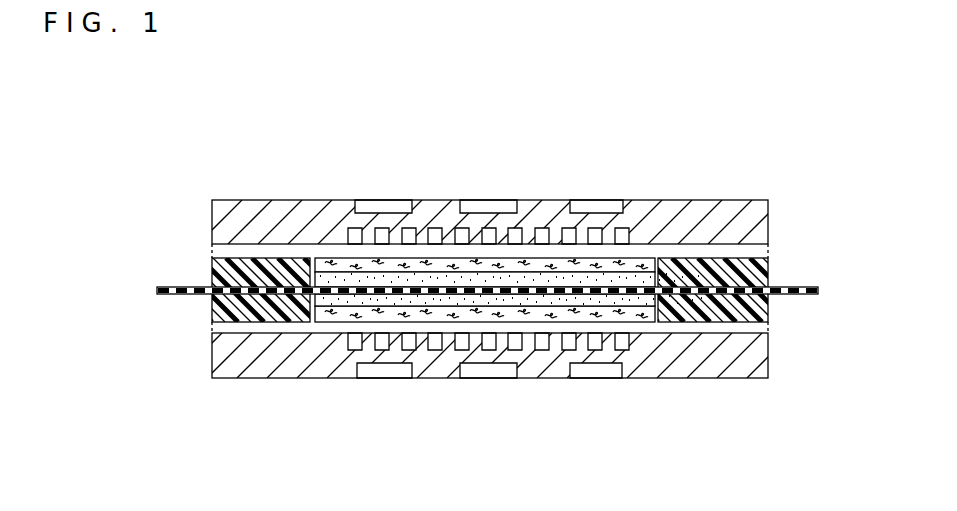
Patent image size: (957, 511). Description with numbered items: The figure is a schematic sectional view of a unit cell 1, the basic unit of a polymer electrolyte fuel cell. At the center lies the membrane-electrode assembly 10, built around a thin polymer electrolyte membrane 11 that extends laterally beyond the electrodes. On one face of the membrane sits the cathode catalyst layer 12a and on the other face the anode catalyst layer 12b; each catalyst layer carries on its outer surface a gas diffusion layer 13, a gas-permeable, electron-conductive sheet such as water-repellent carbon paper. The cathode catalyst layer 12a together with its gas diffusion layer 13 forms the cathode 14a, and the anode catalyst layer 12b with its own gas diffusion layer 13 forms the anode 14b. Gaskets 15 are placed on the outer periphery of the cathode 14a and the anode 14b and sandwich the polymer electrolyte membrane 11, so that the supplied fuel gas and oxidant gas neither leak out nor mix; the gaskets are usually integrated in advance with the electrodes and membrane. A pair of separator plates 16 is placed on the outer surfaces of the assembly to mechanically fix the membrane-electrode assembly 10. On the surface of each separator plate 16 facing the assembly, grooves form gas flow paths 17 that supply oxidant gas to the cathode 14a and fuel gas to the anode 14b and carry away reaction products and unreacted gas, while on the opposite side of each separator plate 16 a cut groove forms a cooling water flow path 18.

The unit cell 1 is at (422, 106).
The membrane-electrode assembly 10 is at (148, 243).
The polymer electrolyte membrane 11 is at (796, 294).
The cathode catalyst layer 12a is at (637, 262).
The anode catalyst layer 12b is at (638, 312).
The gas diffusion layer 13 is at (588, 270).
The cathode 14a is at (712, 150).
The anode 14b is at (690, 420).
The gasket 15 is at (222, 310).
The separator plate 16 is at (277, 222).
The gas flow path 17 is at (435, 238).
The cooling water flow path 18 is at (497, 208).